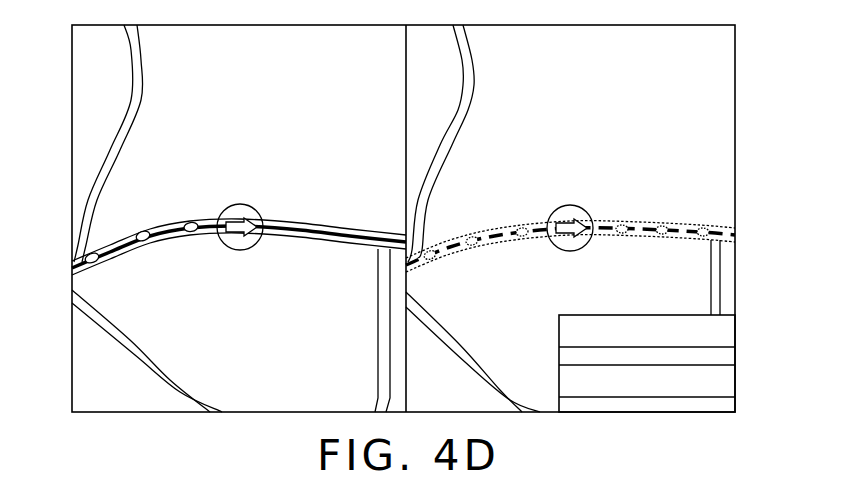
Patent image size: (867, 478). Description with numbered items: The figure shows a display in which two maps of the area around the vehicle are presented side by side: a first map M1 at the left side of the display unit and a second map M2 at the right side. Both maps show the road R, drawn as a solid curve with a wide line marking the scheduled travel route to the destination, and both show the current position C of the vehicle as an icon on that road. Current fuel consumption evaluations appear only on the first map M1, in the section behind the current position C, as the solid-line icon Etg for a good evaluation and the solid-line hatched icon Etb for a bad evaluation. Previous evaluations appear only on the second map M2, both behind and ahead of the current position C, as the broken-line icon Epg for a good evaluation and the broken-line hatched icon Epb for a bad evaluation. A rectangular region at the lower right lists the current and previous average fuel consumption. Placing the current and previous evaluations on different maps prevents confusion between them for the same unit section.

The first map M1 is at (72, 68).
The second map M2 is at (735, 70).
The road R is at (165, 222).
The current position C is at (233, 206).
The solid-line hatched icon Etb is at (93, 262).
The solid-line icon Etg is at (148, 243).
The broken-line hatched icon Epb is at (480, 250).
The broken-line icon Epg is at (630, 214).